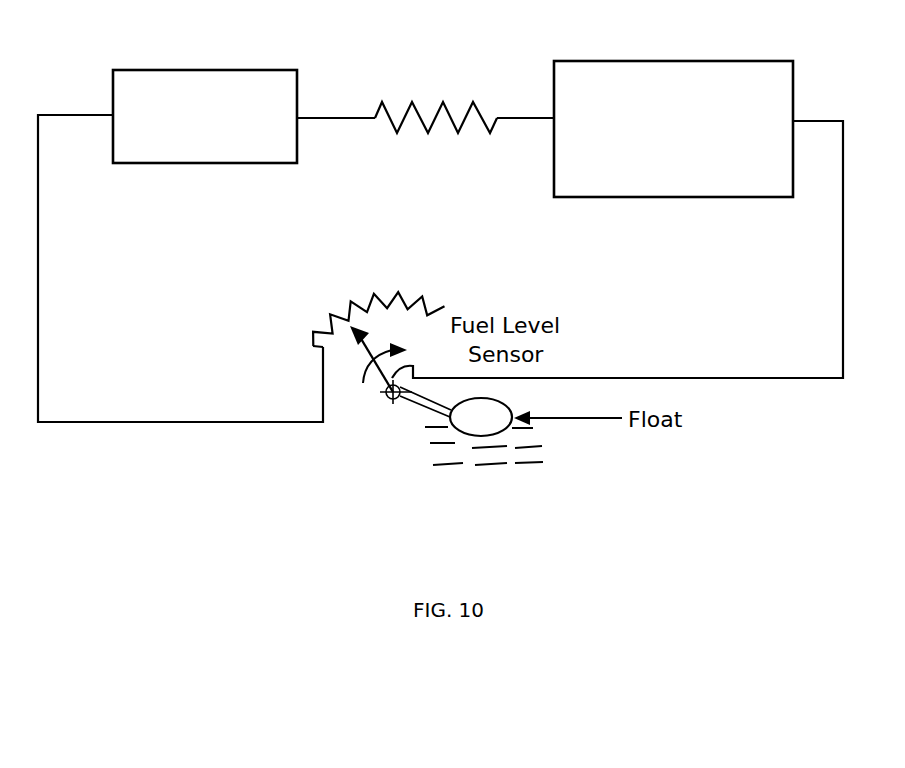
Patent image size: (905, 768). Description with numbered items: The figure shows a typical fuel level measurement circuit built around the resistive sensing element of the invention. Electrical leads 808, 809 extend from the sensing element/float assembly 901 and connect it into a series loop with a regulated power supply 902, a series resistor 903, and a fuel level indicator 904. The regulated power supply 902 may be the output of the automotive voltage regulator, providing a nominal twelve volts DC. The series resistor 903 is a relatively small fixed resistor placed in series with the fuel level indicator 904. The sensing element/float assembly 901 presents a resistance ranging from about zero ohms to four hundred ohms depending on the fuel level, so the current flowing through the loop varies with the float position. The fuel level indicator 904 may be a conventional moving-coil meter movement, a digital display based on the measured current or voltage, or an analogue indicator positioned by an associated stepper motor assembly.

The regulated power supply 902 is at (232, 70).
The series resistor 903 is at (442, 140).
The fuel level indicator 904 is at (752, 61).
The electrical lead 809 is at (323, 379).
The electrical lead 808 is at (405, 367).
The sensing element/float assembly 901 is at (392, 400).